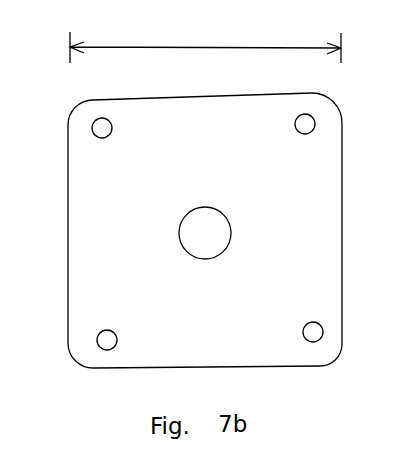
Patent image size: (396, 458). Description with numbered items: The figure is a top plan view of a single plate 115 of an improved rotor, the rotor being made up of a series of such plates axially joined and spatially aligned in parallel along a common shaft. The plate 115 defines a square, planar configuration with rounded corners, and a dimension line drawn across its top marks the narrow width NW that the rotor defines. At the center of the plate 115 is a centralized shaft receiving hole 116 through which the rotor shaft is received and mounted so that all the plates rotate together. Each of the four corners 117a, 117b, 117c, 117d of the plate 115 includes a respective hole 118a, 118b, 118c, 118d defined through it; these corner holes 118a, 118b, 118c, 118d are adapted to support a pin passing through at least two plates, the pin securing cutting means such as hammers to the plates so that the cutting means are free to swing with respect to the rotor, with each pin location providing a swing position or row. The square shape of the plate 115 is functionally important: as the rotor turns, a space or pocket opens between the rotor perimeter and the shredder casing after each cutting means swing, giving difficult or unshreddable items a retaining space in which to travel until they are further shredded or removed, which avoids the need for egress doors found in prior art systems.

The narrow width NW is at (209, 47).
The plate 115 is at (264, 95).
The centralized shaft receiving hole 116 is at (181, 229).
The corner 117a is at (75, 123).
The corner 117b is at (323, 128).
The corner 117c is at (116, 362).
The corner 117d is at (335, 330).
The hole 118a is at (105, 118).
The hole 118b is at (313, 115).
The hole 118c is at (98, 341).
The hole 118d is at (319, 339).